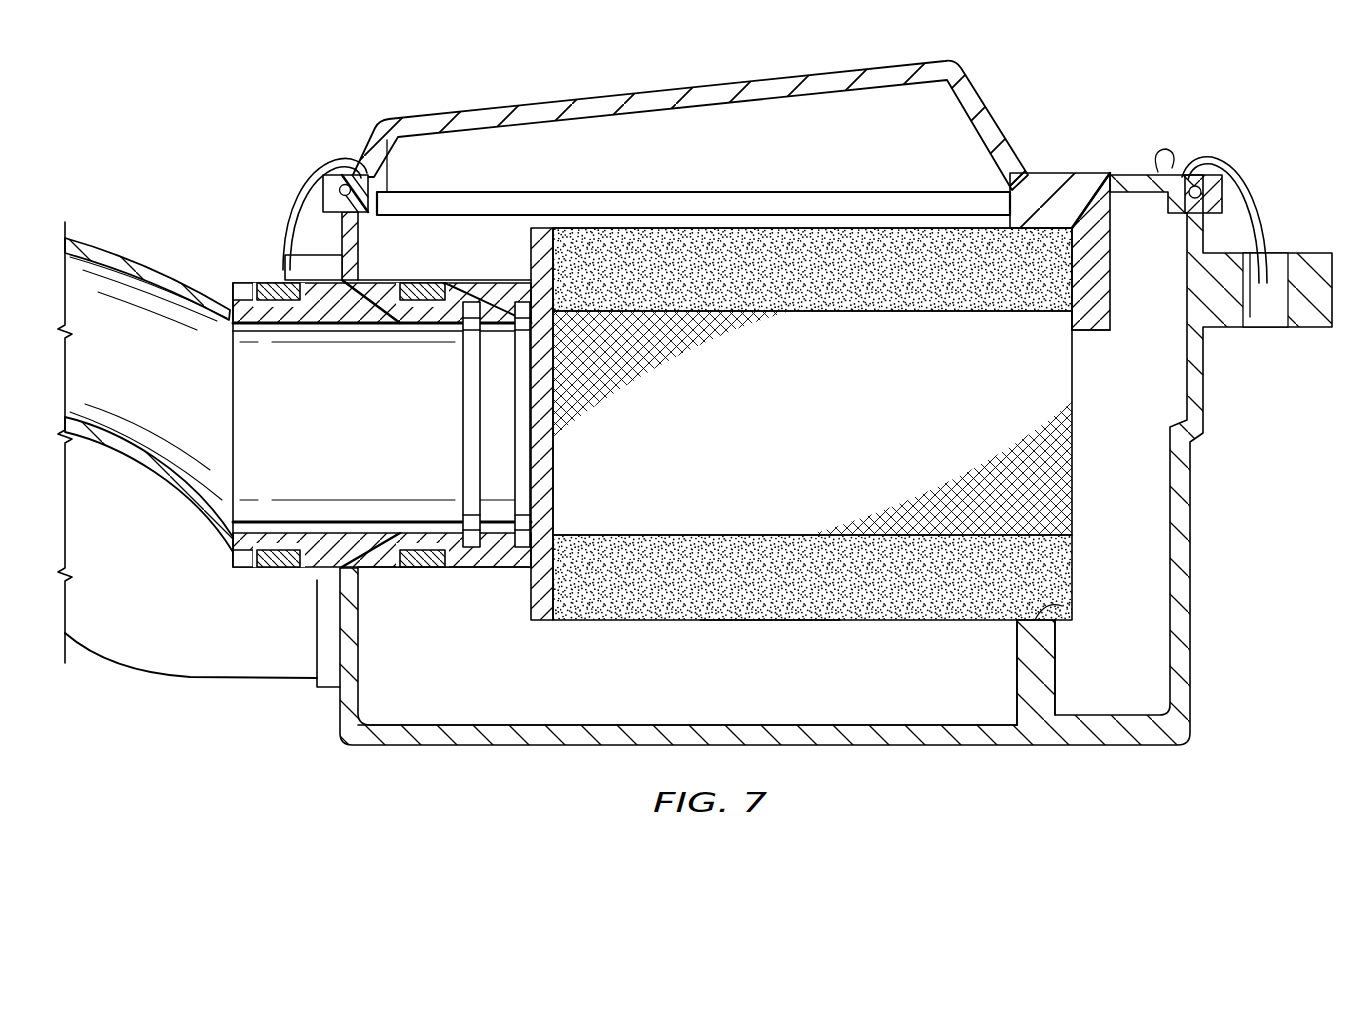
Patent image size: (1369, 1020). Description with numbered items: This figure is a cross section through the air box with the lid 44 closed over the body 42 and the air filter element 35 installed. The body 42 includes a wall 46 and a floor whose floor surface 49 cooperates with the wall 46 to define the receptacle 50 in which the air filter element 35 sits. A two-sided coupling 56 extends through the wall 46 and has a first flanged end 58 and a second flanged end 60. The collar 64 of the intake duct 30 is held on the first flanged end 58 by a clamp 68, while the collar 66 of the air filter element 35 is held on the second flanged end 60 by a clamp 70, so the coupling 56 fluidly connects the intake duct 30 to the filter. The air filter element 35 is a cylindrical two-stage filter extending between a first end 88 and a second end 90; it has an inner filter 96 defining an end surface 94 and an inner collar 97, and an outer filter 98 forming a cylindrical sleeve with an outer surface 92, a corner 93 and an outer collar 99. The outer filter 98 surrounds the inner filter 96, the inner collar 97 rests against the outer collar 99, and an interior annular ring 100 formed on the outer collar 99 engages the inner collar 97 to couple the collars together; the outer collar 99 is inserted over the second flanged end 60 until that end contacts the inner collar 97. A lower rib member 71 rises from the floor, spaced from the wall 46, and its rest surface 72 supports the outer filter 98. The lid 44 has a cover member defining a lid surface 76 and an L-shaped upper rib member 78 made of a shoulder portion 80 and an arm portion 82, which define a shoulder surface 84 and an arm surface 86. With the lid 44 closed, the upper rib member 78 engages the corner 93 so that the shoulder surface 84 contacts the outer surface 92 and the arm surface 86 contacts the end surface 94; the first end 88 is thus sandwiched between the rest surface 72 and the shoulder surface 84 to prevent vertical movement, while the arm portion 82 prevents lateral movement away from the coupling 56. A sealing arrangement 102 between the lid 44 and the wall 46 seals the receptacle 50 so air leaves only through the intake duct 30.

The intake duct 30 is at (90, 236).
The air filter element 35 is at (770, 622).
The body 42 is at (900, 752).
The lid 44 is at (522, 107).
The wall 46 is at (1203, 360).
The floor surface 49 is at (560, 722).
The receptacle 50 is at (1112, 519).
The coupling 56 is at (365, 258).
The first flanged end 58 is at (283, 318).
The second flanged end 60 is at (400, 307).
The collar 64 is at (273, 307).
The collar 66 is at (430, 305).
The clamp 68 is at (275, 567).
The clamp 70 is at (417, 568).
The lower rib member 71 is at (1010, 657).
The rest surface 72 is at (1050, 612).
The lid surface 76 is at (395, 193).
The upper rib member 78 is at (1112, 270).
The shoulder portion 80 is at (1045, 183).
The arm portion 82 is at (1100, 318).
The shoulder surface 84 is at (1040, 233).
The arm surface 86 is at (1072, 330).
The first end 88 is at (853, 417).
The second end 90 is at (470, 585).
The outer surface 92 is at (600, 228).
The corner 93 is at (1078, 224).
The end surface 94 is at (1075, 370).
The inner filter 96 is at (786, 439).
The inner collar 97 is at (466, 430).
The outer filter 98 is at (670, 245).
The outer collar 99 is at (498, 280).
The interior annular ring 100 is at (500, 521).
The sealing arrangement 102 is at (348, 178).